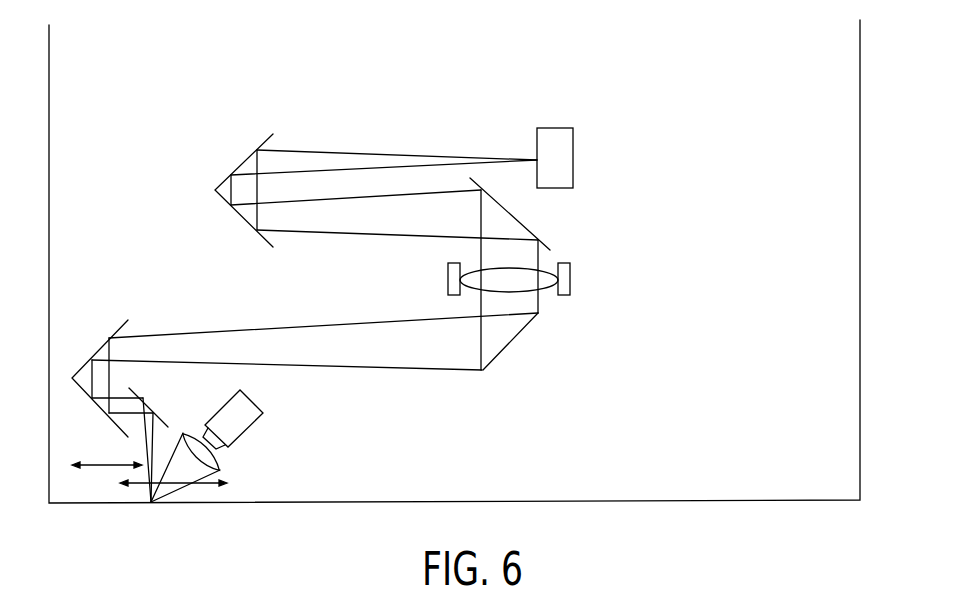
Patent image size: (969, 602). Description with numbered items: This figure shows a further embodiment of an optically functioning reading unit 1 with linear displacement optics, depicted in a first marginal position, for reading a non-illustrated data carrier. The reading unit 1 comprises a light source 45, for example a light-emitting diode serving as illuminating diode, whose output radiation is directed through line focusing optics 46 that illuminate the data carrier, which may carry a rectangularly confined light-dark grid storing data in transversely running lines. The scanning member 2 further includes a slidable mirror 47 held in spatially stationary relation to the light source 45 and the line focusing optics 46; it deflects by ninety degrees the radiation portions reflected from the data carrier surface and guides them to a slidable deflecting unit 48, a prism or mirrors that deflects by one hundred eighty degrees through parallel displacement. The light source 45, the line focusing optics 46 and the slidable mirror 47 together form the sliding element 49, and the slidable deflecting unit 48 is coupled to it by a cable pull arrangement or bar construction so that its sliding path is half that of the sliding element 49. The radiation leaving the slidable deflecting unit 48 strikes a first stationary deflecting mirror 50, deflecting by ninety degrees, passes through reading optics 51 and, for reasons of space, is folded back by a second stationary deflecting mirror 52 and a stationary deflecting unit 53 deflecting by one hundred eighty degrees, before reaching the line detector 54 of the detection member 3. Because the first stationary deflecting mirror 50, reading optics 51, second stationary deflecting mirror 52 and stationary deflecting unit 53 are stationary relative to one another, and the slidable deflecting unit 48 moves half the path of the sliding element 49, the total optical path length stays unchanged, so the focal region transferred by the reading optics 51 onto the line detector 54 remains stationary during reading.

The reading unit 1 is at (377, 78).
The scanning member 2 is at (214, 196).
The detection member 3 is at (577, 119).
The light source 45 is at (252, 408).
The line focusing optics 46 is at (213, 462).
The slidable mirror 47 is at (139, 398).
The slidable deflecting unit 48 is at (115, 335).
The sliding element 49 is at (362, 436).
The first stationary deflecting mirror 50 is at (505, 347).
The reading optics 51 is at (525, 267).
The second stationary deflecting mirror 52 is at (520, 223).
The stationary deflecting unit 53 is at (250, 225).
The line detector 54 is at (567, 168).